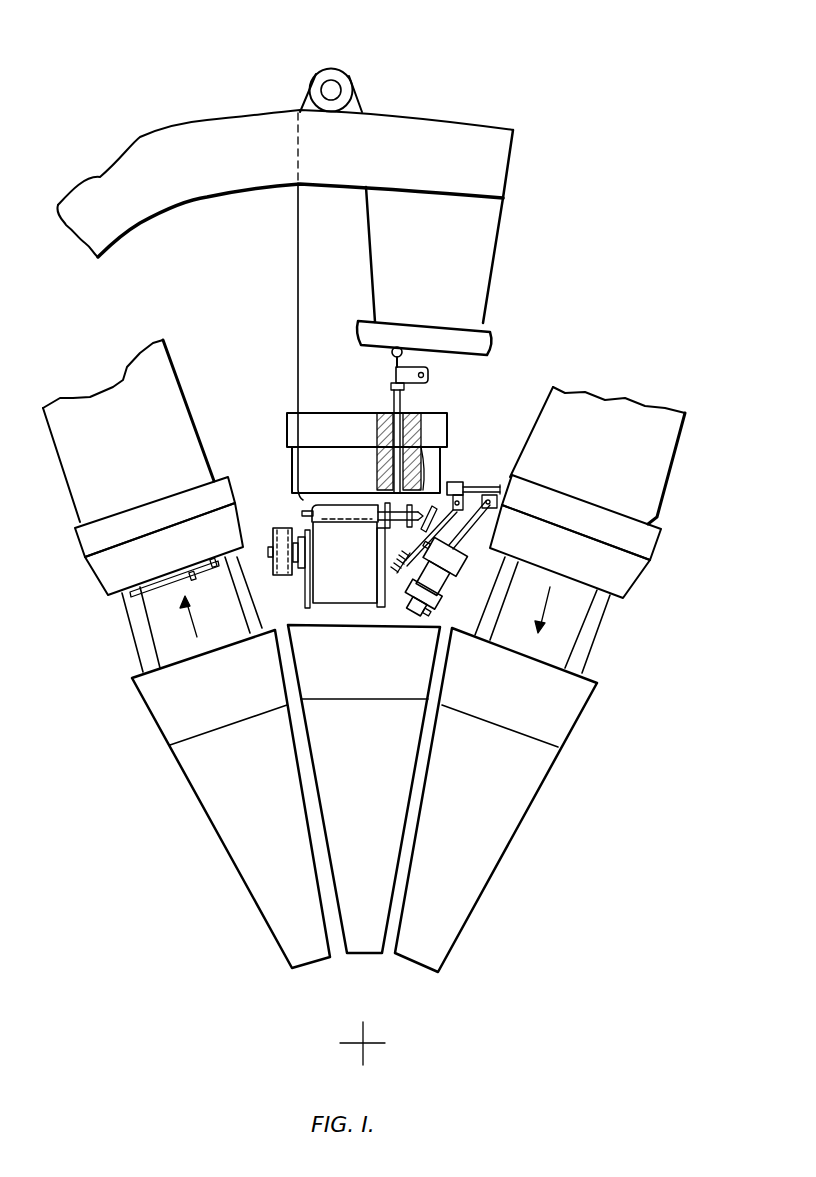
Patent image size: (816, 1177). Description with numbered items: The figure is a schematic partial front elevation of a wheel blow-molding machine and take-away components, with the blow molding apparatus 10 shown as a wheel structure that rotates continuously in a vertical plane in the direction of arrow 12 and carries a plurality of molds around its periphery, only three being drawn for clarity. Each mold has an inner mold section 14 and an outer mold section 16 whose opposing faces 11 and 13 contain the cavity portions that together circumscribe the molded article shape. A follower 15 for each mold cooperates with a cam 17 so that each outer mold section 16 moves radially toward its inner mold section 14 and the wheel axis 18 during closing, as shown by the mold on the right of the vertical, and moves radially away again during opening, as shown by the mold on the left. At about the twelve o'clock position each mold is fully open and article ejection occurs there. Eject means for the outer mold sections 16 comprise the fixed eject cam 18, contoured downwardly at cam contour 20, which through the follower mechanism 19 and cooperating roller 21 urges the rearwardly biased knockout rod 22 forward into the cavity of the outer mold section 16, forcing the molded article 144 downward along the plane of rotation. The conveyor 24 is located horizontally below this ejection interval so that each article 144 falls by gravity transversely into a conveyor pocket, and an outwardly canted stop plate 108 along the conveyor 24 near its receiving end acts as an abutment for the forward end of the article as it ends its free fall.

The blow molding apparatus 10 is at (480, 85).
The opposing face of inner mold section 11 is at (365, 622).
The arrow indicating direction of wheel rotation 12 is at (262, 393).
The opposing face of outer mold section 13 is at (300, 498).
The inner mold section 14 is at (227, 704).
The follower 15 is at (345, 70).
The outer mold section 16 is at (350, 479).
The cam 17 is at (405, 112).
The eject cam 18 is at (480, 342).
The follower mechanism 19 is at (430, 375).
The cam contour 20 is at (372, 340).
The roller 21 is at (392, 358).
The knockout rod 22 is at (402, 433).
The conveyor 24 is at (290, 518).
The stop plate 108 is at (437, 512).
The article 144 is at (397, 532).